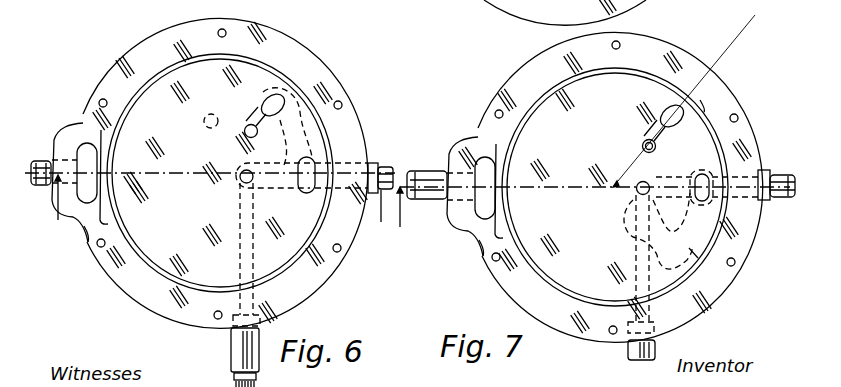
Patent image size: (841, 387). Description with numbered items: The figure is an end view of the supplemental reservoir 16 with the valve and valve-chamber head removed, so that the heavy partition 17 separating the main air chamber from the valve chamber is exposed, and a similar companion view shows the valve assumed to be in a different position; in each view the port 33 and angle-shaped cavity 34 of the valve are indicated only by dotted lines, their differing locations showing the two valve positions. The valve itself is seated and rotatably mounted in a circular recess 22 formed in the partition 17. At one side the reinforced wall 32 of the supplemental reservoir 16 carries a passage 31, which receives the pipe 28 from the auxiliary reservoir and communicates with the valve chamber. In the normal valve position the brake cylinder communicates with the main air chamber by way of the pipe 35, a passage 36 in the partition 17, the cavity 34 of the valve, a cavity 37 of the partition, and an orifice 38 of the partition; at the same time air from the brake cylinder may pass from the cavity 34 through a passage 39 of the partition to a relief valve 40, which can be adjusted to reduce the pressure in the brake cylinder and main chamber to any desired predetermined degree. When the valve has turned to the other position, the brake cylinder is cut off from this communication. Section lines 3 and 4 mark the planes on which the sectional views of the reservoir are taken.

In FIG. 6, the section line 3— 3 is at (210, 199).
In FIG. 7, the section line 4— 4 is at (578, 123).
In FIG. 6, the supplemental reservoir 16 is at (218, 173).
In FIG. 7, the supplemental reservoir 16 is at (615, 187).
In FIG. 6, the partition 17 is at (220, 173).
In FIG. 7, the partition 17 is at (615, 187).
In FIG. 7, the circular recess 22 is at (703, 108).
In FIG. 6, the pipe 28 is at (42, 160).
In FIG. 7, the pipe 28 is at (422, 170).
In FIG. 6, the passage 31 is at (85, 229).
In FIG. 7, the passage 31 is at (480, 233).
In FIG. 6, the reinforced wall 32 is at (68, 123).
In FIG. 7, the reinforced wall 32 is at (467, 142).
In FIG. 6, the port 33 is at (204, 122).
In FIG. 7, the port 33 is at (653, 151).
In FIG. 6, the angle-shaped cavity 34 is at (278, 188).
In FIG. 7, the angle-shaped cavity 34 is at (697, 256).
In FIG. 6, the pipe 35 is at (385, 165).
In FIG. 7, the pipe 35 is at (780, 175).
In FIG. 6, the passage 36 is at (313, 163).
In FIG. 7, the passage 36 is at (707, 201).
In FIG. 6, the cavity 37 is at (277, 100).
In FIG. 7, the cavity 37 is at (680, 126).
In FIG. 6, the orifice 38 is at (249, 124).
In FIG. 7, the orifice 38 is at (643, 143).
In FIG. 6, the passage 39 is at (240, 207).
In FIG. 7, the passage 39 is at (635, 191).
In FIG. 6, the relief valve 40 is at (235, 342).
In FIG. 7, the relief valve 40 is at (660, 343).